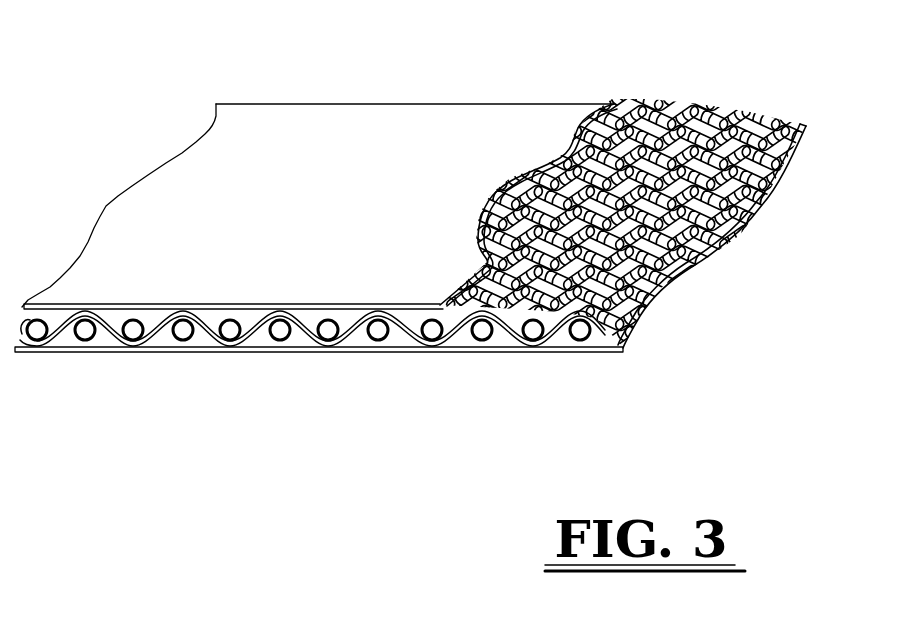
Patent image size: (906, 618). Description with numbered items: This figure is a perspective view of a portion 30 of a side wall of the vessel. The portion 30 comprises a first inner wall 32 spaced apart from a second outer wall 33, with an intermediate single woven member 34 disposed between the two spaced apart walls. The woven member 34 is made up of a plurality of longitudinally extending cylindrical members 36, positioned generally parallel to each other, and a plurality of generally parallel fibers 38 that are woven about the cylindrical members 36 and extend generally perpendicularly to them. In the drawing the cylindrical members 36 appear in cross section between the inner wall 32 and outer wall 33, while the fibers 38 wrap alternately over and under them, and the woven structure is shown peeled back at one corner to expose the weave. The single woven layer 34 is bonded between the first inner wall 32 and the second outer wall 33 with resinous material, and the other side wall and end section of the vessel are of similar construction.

The portion of the side wall 30 is at (172, 106).
The first inner wall 32 is at (50, 286).
The second outer wall 33 is at (55, 353).
The intermediate single woven member 34 is at (660, 125).
The cylindrical members 36 is at (133, 330).
The fibers 38 is at (745, 192).